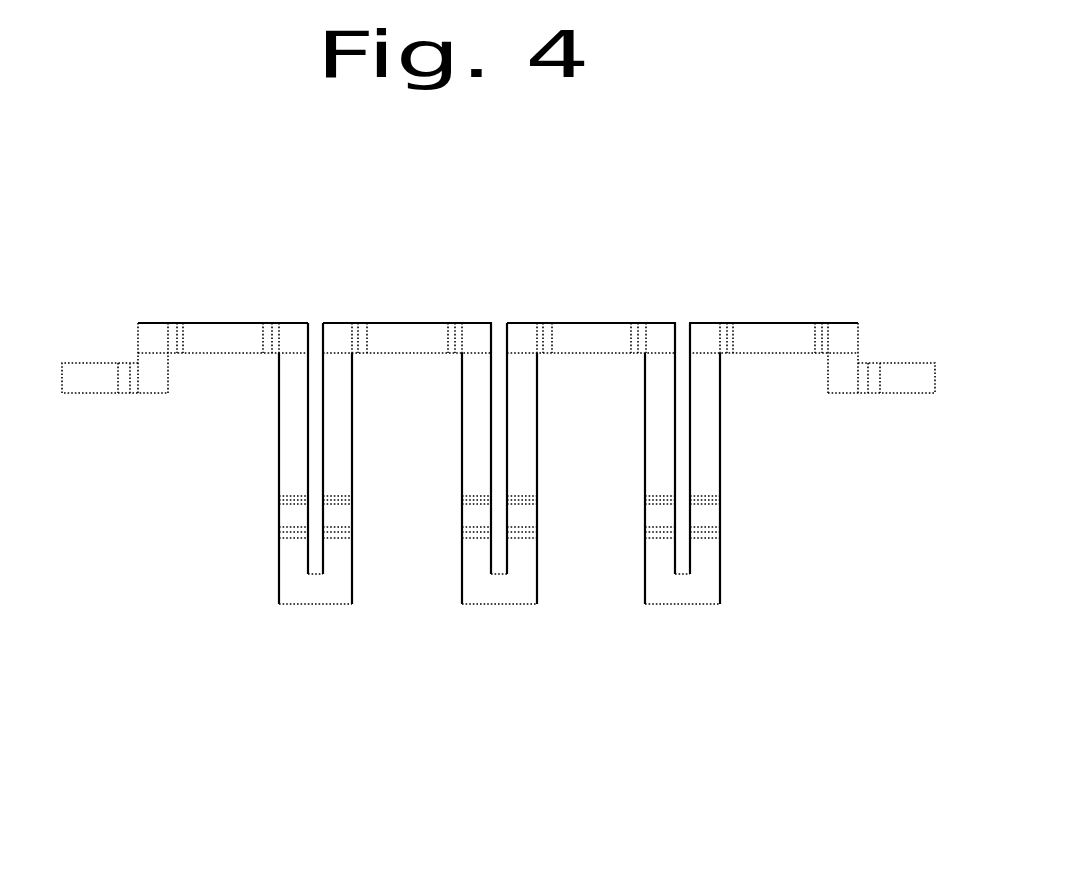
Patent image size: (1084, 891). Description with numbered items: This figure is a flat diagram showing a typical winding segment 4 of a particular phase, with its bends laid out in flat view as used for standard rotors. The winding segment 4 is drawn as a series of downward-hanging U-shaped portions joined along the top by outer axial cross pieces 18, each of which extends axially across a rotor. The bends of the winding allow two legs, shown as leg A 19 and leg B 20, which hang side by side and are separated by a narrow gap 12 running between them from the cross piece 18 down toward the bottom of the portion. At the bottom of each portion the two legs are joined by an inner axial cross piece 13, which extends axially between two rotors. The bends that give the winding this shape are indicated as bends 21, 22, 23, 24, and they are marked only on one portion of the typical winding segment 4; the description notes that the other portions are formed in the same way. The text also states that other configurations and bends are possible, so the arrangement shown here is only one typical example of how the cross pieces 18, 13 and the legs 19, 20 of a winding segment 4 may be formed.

The winding segment 4 is at (515, 668).
The slot 12 is at (317, 338).
The inner axial cross piece 13 is at (317, 592).
The outer axial cross piece 18 is at (239, 339).
The leg A 19 is at (290, 398).
The leg B 20 is at (338, 395).
The bend 21 is at (345, 533).
The bend 22 is at (290, 533).
The bend 23 is at (343, 501).
The bend 24 is at (286, 499).